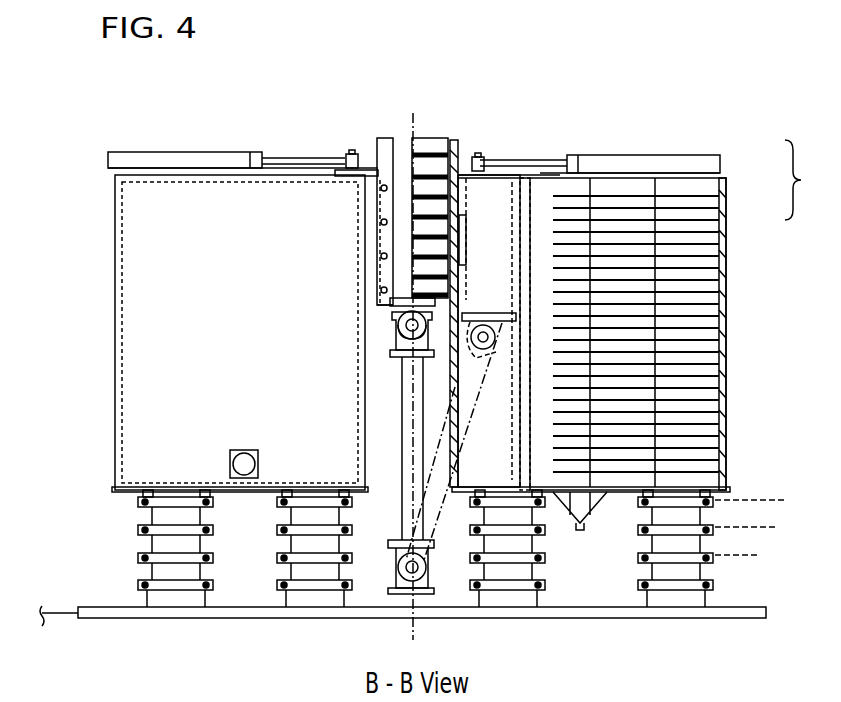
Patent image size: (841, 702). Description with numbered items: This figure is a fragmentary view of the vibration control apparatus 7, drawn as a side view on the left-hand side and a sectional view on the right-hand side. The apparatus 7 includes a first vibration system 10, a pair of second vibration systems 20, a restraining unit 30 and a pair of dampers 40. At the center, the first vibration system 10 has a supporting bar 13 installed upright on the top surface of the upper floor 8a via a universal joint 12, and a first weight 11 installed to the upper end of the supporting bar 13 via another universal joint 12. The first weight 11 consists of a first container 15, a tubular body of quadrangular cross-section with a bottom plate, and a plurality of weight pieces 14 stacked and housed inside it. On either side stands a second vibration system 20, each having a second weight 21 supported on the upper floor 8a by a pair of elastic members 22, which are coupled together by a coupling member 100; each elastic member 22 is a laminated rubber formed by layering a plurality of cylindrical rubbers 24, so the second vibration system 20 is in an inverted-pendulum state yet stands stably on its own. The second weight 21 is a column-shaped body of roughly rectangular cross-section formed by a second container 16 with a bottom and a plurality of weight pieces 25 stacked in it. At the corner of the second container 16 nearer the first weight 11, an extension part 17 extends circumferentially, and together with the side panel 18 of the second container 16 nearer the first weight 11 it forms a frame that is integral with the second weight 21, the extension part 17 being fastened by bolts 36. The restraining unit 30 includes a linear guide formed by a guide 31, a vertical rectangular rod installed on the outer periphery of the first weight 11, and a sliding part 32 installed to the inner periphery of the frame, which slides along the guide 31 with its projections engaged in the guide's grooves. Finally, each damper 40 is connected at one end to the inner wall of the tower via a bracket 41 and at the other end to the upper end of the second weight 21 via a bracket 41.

The vibration control apparatus 7 is at (388, 108).
The upper floor 8a is at (103, 607).
The first vibration system 10 is at (438, 134).
The first weight 11 is at (378, 148).
The universal joint 12 is at (392, 320).
The supporting bar 13 is at (403, 435).
The weight pieces 14 is at (422, 138).
The first container 15 is at (388, 134).
The second container 16 is at (210, 162).
The extension part 17 is at (377, 247).
The side panel 18 is at (470, 264).
The second vibration system 20 is at (238, 160).
The second weight 21 is at (154, 179).
The elastic members 22 is at (272, 556).
The rubbers 24 is at (162, 546).
The weight pieces 25 is at (729, 222).
The restraining unit 30 is at (458, 154).
The guide 31 is at (459, 201).
The sliding part 32 is at (460, 241).
The bolts 36 is at (374, 226).
The dampers 40 is at (180, 154).
The bracket 41 is at (348, 154).
The coupling member 100 is at (196, 562).